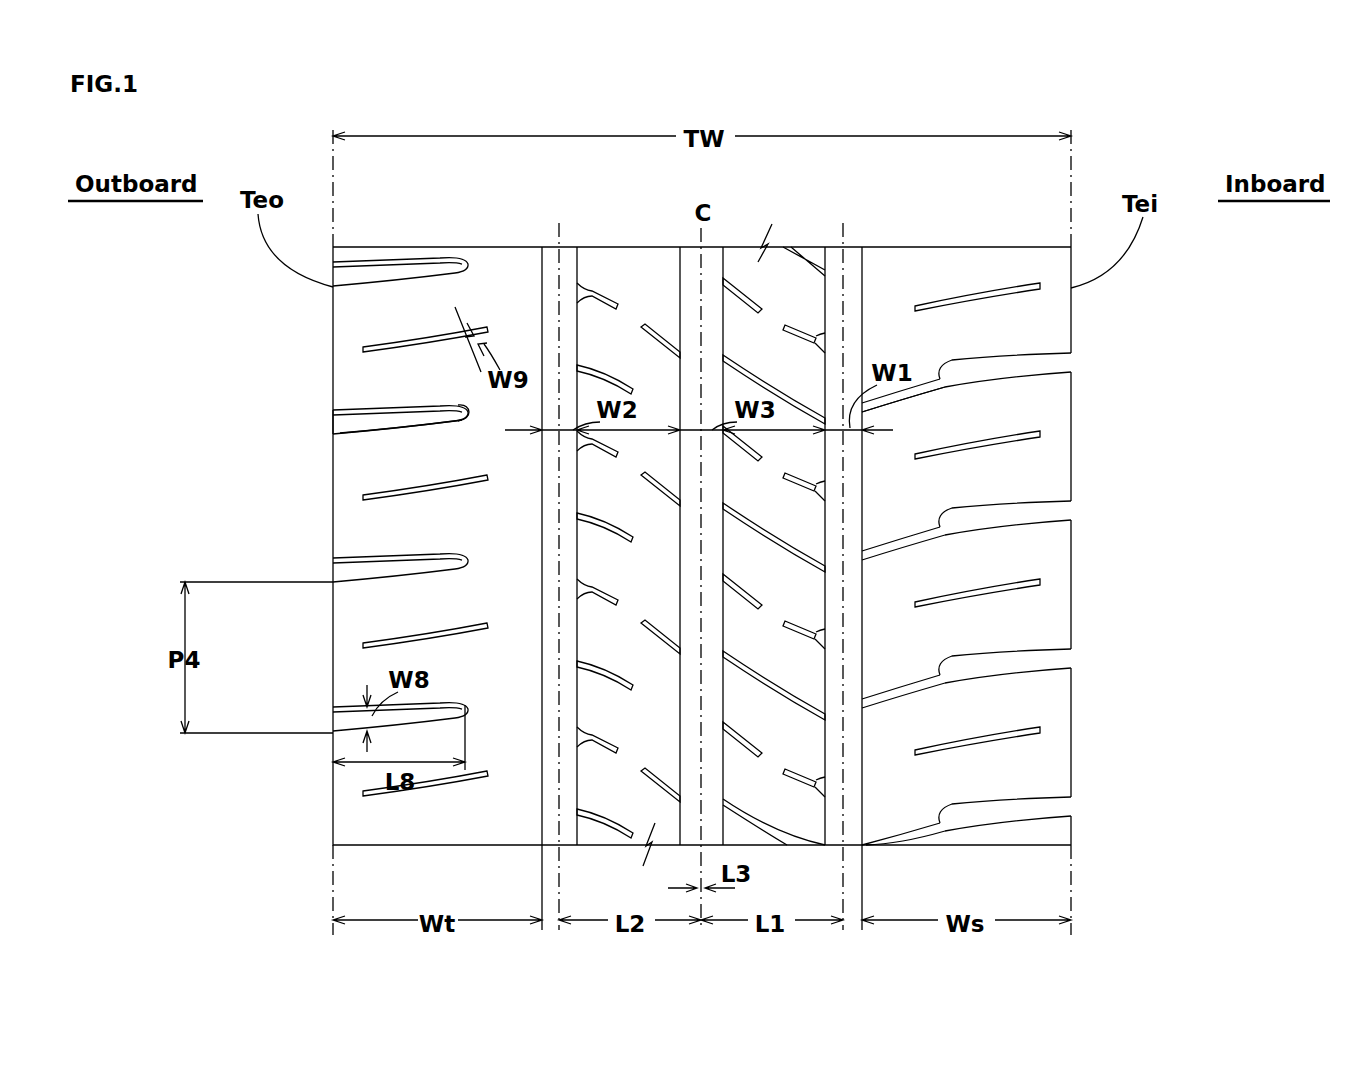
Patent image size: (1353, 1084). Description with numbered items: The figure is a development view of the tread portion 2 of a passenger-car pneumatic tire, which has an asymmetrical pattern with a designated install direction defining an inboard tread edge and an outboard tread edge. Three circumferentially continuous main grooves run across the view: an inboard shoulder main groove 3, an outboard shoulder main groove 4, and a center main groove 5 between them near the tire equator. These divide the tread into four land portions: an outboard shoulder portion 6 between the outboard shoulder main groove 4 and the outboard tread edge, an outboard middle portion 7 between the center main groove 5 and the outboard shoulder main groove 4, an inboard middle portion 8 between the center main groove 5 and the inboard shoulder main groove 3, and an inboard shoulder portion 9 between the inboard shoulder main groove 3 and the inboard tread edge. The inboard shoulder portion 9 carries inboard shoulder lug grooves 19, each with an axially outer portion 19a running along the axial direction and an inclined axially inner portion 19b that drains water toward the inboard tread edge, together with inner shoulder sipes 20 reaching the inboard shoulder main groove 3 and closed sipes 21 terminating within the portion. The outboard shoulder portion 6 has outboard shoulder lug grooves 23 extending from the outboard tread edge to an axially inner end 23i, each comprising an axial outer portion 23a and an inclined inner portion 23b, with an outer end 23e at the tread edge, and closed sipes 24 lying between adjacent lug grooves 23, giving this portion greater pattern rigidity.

The tread portion 2 is at (1093, 186).
The inboard shoulder main groove 3 is at (856, 265).
The outboard shoulder main groove 4 is at (574, 265).
The center main groove 5 is at (716, 265).
The outboard shoulder portion 6 is at (338, 481).
The outboard middle portion 7 is at (624, 350).
The inboard middle portion 8 is at (772, 335).
The inboard shoulder portion 9 is at (1073, 506).
The inboard shoulder lug groove 19 is at (1073, 574).
The axially outer portion 19a is at (1010, 663).
The axially inner portion 19b is at (953, 657).
The inner shoulder sipe 20 is at (903, 398).
The closed sipe 21 is at (977, 738).
The outboard shoulder lug groove 23 is at (228, 305).
The axially outer portion 23a is at (365, 425).
The axially inner portion 23b is at (450, 413).
The outer end of outboard shoulder lateral groove 23e is at (333, 422).
The axially inner end 23i is at (480, 420).
The closed sipe 24 is at (418, 329).